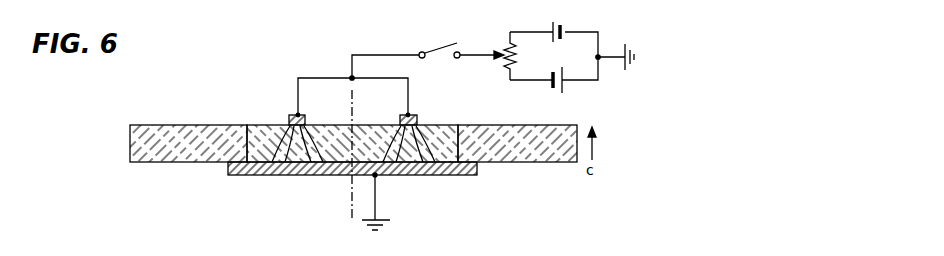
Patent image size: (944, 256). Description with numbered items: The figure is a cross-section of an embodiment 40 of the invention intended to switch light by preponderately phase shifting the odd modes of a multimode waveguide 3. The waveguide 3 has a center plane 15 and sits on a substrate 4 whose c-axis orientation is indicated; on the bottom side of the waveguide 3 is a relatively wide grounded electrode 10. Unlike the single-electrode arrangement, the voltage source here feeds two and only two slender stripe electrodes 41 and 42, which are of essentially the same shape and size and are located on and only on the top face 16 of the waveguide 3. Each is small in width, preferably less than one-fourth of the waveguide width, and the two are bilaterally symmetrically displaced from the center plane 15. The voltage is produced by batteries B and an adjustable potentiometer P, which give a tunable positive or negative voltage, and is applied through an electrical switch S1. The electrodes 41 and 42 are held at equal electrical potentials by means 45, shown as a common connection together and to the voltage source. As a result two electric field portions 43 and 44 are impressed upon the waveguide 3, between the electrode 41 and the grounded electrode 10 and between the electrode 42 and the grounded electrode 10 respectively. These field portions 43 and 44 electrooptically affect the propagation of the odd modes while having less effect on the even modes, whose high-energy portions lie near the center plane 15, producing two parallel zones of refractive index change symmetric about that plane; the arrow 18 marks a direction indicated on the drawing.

The embodiment 40 is at (235, 53).
The means for maintaining equal electrical potentials 45 is at (329, 77).
The substrate 4 is at (184, 125).
The top surface 16 is at (256, 125).
The slender stripe electrode 41 is at (290, 117).
The center plane 15 is at (350, 103).
The slender stripe electrode 42 is at (416, 117).
The multimode waveguide 3 is at (443, 125).
The wide grounded electrode 10 is at (253, 177).
The electric field portion 43 is at (288, 177).
The electric field portion 44 is at (407, 177).
The direction arrow 18 is at (596, 147).
The electrical switch S1 is at (458, 42).
The adjustable potentiometer P is at (498, 60).
The battery B is at (558, 46).